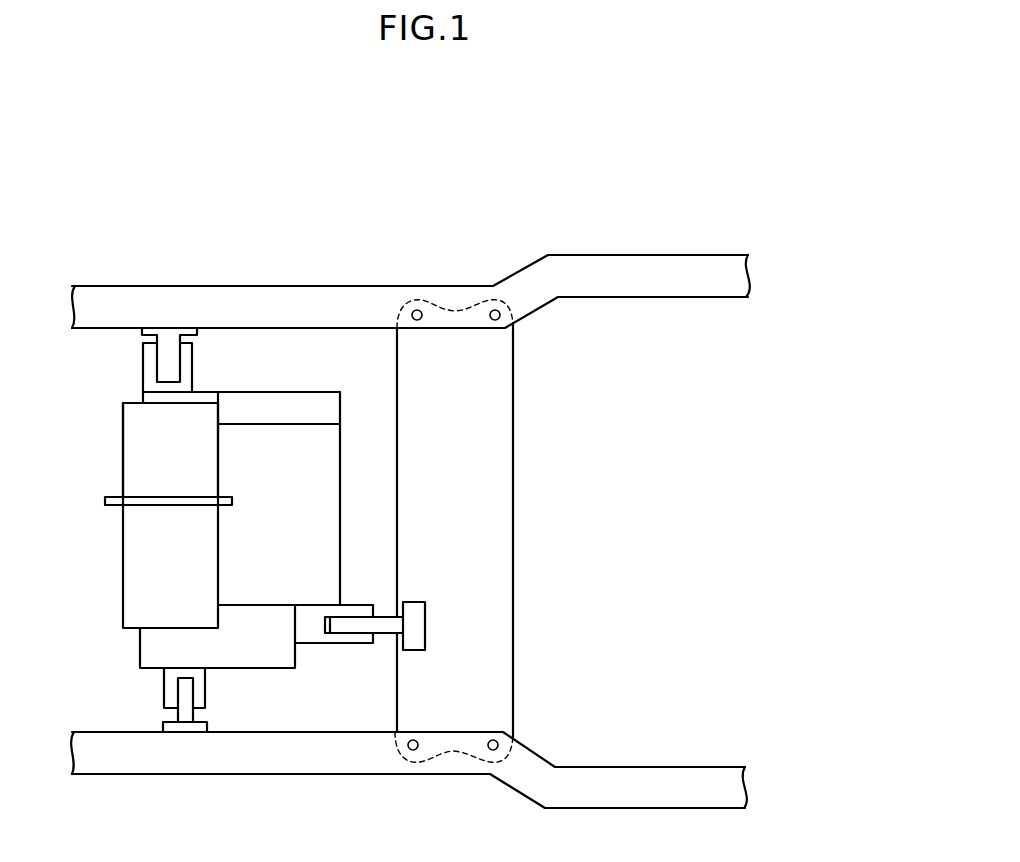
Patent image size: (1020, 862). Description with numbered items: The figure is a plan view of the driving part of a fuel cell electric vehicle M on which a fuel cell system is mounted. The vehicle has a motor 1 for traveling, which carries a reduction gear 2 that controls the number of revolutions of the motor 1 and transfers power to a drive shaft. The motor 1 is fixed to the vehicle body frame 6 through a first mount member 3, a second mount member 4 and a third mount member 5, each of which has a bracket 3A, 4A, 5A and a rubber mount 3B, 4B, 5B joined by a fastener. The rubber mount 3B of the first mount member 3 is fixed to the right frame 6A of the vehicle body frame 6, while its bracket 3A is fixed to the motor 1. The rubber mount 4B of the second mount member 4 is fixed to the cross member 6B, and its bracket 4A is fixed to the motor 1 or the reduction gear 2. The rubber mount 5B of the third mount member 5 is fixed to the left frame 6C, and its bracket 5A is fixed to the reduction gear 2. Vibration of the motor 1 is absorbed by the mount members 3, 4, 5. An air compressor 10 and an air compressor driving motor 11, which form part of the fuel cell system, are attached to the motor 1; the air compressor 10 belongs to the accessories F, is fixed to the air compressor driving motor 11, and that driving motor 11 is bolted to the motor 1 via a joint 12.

The fuel cell electric vehicle M is at (483, 229).
The vehicle body frame 6 is at (608, 249).
The right frame 6A is at (338, 306).
The cross member 6B is at (500, 478).
The left frame 6C is at (243, 757).
The motor for traveling 1 is at (325, 480).
The reduction gear 2 is at (282, 643).
The first mount member 3 is at (167, 318).
The bracket 3A is at (150, 388).
The rubber mount 3B is at (168, 370).
The second mount member 4 is at (346, 666).
The bracket 4A is at (358, 613).
The rubber mount 4B is at (418, 622).
The third mount member 5 is at (157, 700).
The bracket 5A is at (200, 690).
The rubber mount 5B is at (185, 725).
The air compressor 10 is at (142, 595).
The air compressor driving motor 11 is at (137, 480).
The joint 12 is at (225, 500).
The accessories F is at (218, 386).